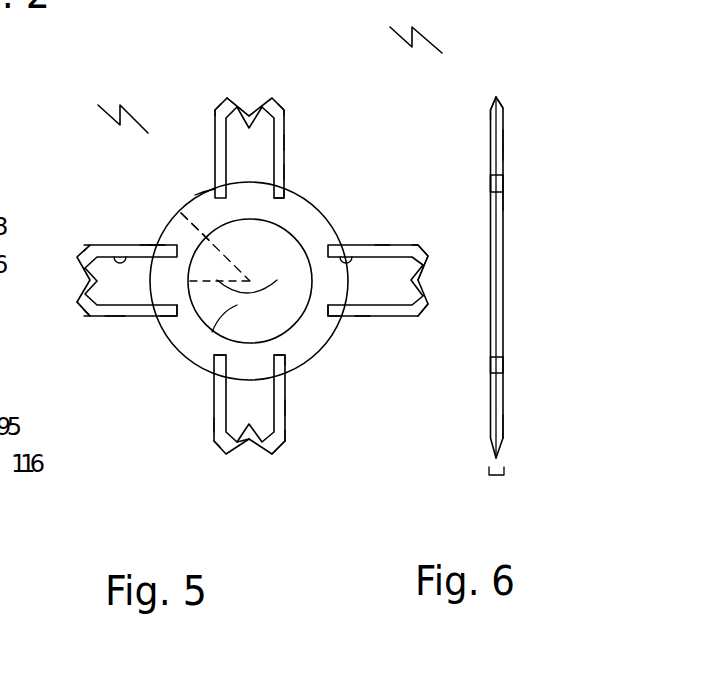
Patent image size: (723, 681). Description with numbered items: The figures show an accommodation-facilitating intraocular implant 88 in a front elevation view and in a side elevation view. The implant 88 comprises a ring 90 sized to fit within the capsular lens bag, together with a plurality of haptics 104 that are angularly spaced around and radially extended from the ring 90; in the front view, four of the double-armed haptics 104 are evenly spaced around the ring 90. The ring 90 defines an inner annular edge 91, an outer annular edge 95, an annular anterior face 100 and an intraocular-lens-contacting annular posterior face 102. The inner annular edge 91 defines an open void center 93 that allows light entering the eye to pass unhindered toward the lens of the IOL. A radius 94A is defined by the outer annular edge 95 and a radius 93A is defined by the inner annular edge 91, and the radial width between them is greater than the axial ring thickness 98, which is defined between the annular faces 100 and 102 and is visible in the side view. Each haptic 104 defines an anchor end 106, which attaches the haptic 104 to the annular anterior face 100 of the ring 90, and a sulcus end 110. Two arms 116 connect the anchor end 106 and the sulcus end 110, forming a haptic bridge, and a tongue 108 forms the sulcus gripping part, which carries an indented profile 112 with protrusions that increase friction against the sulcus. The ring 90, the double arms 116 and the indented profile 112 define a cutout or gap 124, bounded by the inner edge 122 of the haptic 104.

In FIG. 5, the accommodation-facilitating intraocular implant 88 is at (113, 104).
In FIG. 6, the accommodation-facilitating intraocular implant 88 is at (405, 26).
In FIG. 5, the ring 90 is at (182, 343).
In FIG. 6, the ring 90 is at (503, 312).
In FIG. 5, the inner annular edge 91 is at (250, 281).
In FIG. 5, the open void center 93 is at (263, 248).
In FIG. 5, the radius of the inner annular edge 93A is at (246, 270).
In FIG. 5, the radius of the outer annular edge 94A is at (190, 200).
In FIG. 5, the outer annular edge 95 is at (201, 203).
In FIG. 6, the axial ring thickness 98 is at (496, 477).
In FIG. 5, the annular anterior face 100 is at (173, 334).
In FIG. 6, the annular anterior face 100 is at (490, 186).
In FIG. 6, the intraocular-lens-contacting annular posterior face 102 is at (503, 196).
In FIG. 5, the haptic 104 is at (285, 173).
In FIG. 6, the haptic 104 is at (503, 138).
In FIG. 5, the anchor end 106 is at (287, 197).
In FIG. 6, the anchor end 106 is at (503, 185).
In FIG. 5, the tongue 108 is at (284, 109).
In FIG. 6, the tongue 108 is at (503, 106).
In FIG. 5, the sulcus end 110 is at (215, 109).
In FIG. 6, the sulcus end 110 is at (495, 97).
In FIG. 5, the indented profile 112 is at (229, 97).
In FIG. 6, the indented profile 112 is at (492, 104).
In FIG. 5, the arm 116 is at (285, 142).
In FIG. 6, the arm 116 is at (503, 150).
In FIG. 5, the inner edge 122 is at (118, 245).
In FIG. 5, the cutout or gap 124 is at (268, 168).